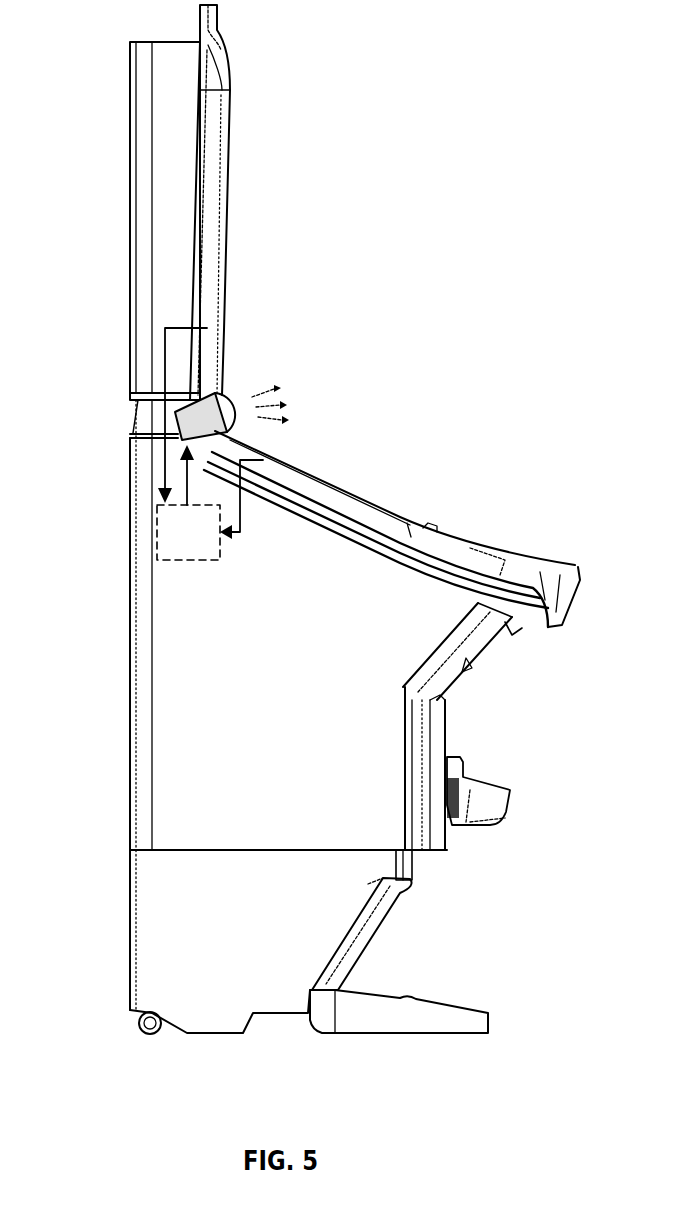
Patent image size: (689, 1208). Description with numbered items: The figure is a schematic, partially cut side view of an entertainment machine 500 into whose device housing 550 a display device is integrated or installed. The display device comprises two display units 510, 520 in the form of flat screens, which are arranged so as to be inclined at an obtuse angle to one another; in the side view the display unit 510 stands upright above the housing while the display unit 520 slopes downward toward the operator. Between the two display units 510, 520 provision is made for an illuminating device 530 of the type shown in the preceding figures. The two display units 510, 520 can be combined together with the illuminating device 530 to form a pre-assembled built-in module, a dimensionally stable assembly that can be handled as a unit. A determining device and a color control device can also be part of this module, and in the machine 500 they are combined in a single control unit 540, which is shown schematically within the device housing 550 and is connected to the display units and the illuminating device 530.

The entertainment machine 500 is at (353, 275).
The display unit 510 is at (213, 148).
The display unit 520 is at (328, 502).
The illuminating device 530 is at (228, 392).
The control unit 540 is at (210, 444).
The device housing 550 is at (130, 438).